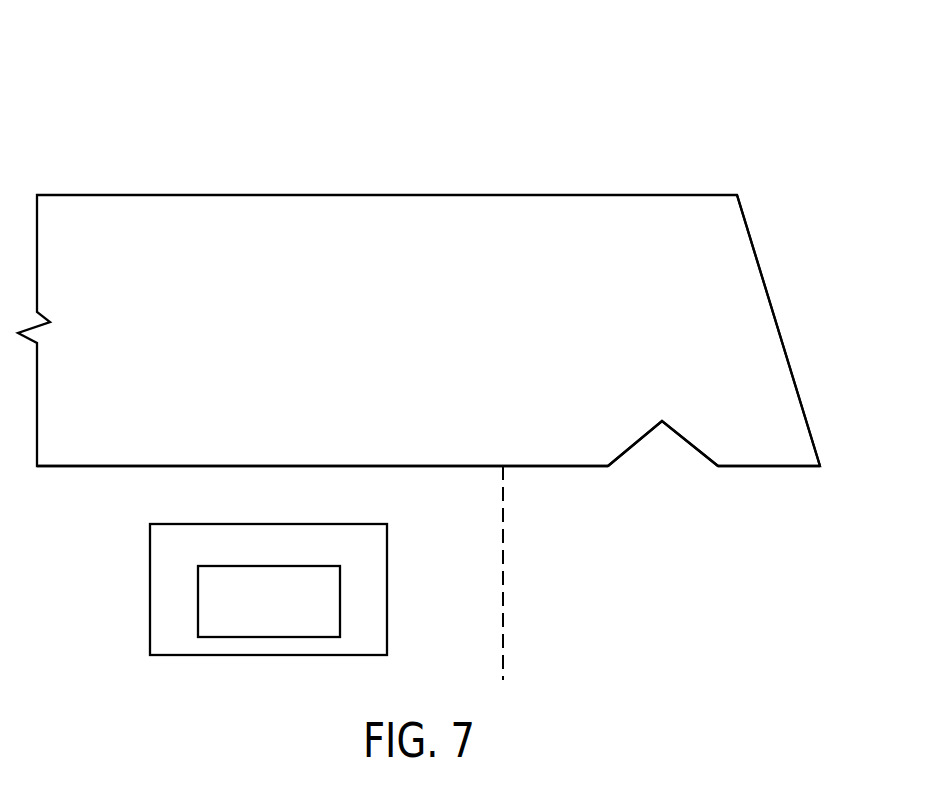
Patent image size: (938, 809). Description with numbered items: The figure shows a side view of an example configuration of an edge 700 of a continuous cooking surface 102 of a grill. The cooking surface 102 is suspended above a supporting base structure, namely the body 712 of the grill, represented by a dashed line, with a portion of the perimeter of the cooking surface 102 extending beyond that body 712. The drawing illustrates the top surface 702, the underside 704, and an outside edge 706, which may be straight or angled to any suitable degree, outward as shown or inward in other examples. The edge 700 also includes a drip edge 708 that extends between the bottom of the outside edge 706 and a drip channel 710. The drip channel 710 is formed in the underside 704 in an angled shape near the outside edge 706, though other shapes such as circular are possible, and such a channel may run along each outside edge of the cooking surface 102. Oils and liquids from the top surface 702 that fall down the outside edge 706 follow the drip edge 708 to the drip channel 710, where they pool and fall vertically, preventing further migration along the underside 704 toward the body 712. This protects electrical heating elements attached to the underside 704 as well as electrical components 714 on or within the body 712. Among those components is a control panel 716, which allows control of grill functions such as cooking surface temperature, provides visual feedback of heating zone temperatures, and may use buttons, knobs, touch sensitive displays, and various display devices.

The cooking surface 102 is at (426, 342).
The edge 700 is at (704, 90).
The top surface 702 is at (422, 156).
The underside 704 is at (290, 477).
The outside edge 706 is at (792, 305).
The drip edge 708 is at (771, 479).
The drip channel 710 is at (663, 462).
The body 712 is at (503, 559).
The electrical components 714 is at (355, 523).
The control panel 716 is at (285, 627).